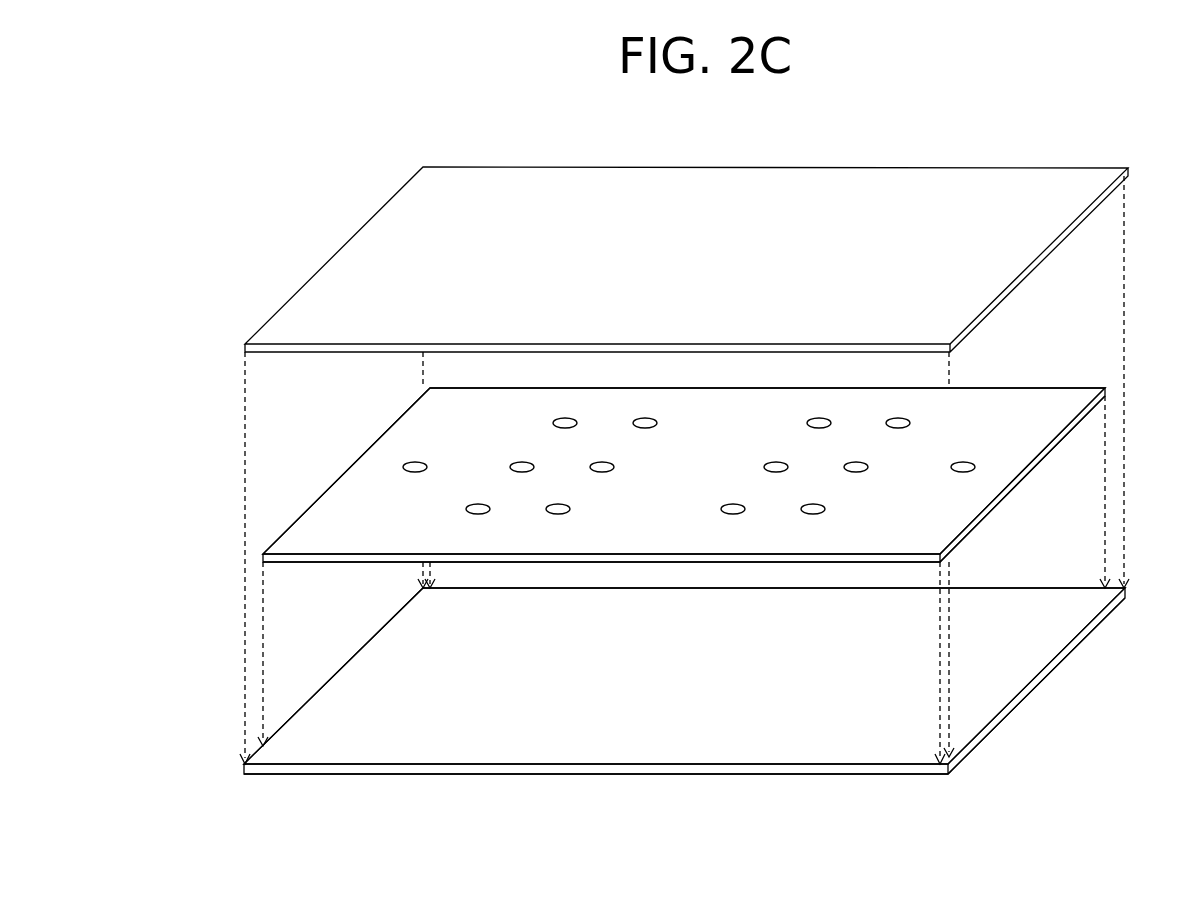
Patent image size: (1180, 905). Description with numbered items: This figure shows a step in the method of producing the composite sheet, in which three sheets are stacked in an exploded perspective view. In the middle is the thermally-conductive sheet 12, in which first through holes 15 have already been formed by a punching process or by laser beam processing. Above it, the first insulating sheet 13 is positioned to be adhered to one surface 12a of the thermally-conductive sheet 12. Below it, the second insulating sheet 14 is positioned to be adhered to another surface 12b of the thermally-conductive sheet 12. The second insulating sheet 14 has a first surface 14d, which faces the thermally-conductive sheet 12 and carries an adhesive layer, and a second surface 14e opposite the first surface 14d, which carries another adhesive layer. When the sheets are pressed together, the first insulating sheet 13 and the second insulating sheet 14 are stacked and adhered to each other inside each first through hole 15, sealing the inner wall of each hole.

The first insulating sheet 13 is at (997, 186).
The thermally-conductive sheet 12 is at (1055, 398).
The one surface of thermally-conductive sheet 12a is at (320, 518).
The another surface of thermally-conductive sheet 12b is at (316, 563).
The first through holes 15 is at (400, 464).
The second insulating sheet 14 is at (990, 675).
The first surface of second insulating sheet 14d is at (308, 730).
The second surface of second insulating sheet 14e is at (305, 775).